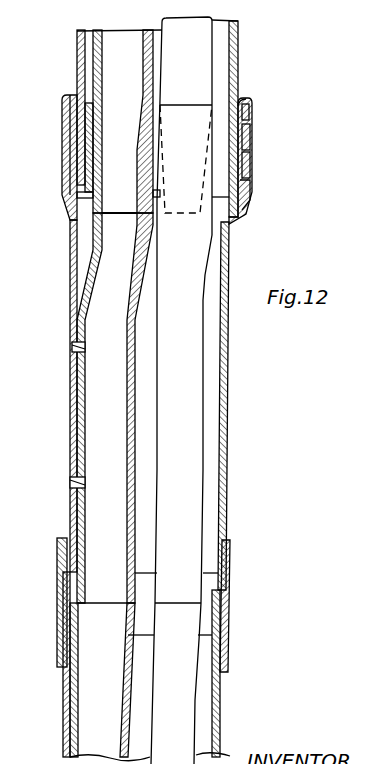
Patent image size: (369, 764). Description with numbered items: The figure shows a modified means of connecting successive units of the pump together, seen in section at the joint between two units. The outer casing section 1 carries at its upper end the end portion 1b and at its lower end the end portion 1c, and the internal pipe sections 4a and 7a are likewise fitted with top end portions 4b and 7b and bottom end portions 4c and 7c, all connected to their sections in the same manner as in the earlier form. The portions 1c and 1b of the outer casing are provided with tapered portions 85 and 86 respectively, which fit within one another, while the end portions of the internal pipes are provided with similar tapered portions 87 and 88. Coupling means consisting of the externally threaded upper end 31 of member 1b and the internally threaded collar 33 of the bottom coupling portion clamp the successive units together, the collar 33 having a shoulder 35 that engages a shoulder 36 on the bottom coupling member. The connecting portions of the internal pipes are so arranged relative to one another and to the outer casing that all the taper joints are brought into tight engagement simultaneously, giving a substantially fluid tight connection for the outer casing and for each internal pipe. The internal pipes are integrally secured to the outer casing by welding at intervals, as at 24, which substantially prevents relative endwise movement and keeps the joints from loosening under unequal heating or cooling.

The outer casing section 1 is at (62, 708).
The top coupling member of outer casing 1b is at (72, 392).
The bottom coupling member of outer casing 1c is at (77, 57).
The internal pipe section 4a is at (77, 720).
The top coupling member of internal pipe 4b is at (90, 438).
The bottom coupling member of internal pipe 4c is at (100, 58).
The internal pipe section 7a is at (175, 727).
The top coupling member of internal pipe 7b is at (180, 418).
The bottom coupling member of internal pipe 7c is at (195, 67).
The weld 24 is at (72, 345).
The externally threaded upper end 31 is at (248, 187).
The internally threaded collar 33 is at (252, 122).
The shoulder on collar 35 is at (243, 95).
The shoulder on bottom coupling member 36 is at (248, 118).
The tapered portion of outer casing end portion 1c 85 is at (250, 143).
The tapered portion of outer casing end portion 1b 86 is at (250, 168).
The tapered portion of internal pipe end portion 87 is at (108, 149).
The tapered portion of internal pipe end portion 88 is at (93, 166).